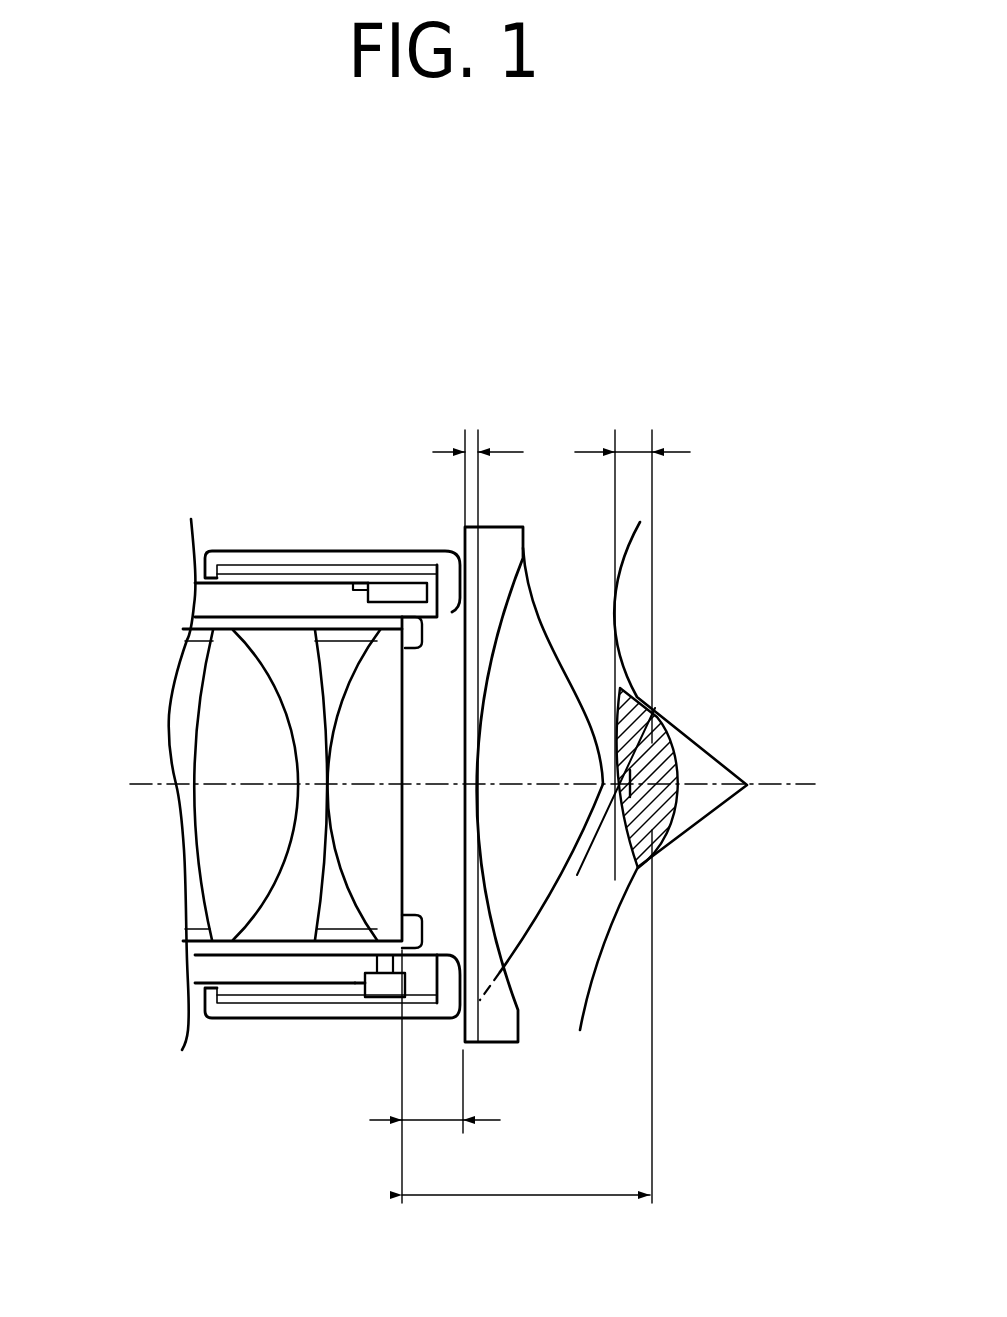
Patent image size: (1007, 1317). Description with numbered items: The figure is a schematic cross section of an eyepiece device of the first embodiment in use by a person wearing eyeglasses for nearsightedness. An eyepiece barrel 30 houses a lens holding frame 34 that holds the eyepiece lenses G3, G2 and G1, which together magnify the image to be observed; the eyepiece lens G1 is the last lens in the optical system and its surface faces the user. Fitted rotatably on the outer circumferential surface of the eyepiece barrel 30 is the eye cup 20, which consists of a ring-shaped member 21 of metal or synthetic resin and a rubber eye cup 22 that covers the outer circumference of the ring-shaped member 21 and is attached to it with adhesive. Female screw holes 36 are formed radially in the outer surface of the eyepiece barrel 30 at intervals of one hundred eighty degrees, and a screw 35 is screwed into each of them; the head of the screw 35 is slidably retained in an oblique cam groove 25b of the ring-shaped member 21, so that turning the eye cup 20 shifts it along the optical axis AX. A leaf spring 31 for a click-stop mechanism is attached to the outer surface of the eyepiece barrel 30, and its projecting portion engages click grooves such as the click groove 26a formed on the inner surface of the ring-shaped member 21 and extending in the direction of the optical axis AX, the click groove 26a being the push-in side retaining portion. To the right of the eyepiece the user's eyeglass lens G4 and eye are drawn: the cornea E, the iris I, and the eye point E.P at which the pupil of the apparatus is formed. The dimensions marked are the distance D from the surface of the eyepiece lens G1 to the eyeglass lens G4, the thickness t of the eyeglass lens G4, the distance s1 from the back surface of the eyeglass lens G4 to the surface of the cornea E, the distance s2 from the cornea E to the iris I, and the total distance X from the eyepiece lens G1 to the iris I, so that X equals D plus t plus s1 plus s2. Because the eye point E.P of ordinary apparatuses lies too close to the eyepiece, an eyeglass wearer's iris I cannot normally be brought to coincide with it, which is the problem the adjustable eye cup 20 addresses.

The eye cup 20 is at (326, 684).
The ring-shaped member 21 is at (247, 565).
The rubber eye cup 22 is at (320, 565).
The click groove 26a is at (372, 583).
The eyepiece barrel 30 is at (213, 602).
The leaf spring 31 is at (397, 583).
The lens holding frame 34 is at (200, 620).
The screw 35 is at (388, 990).
The female screw hole 36 is at (410, 920).
The cam groove 25b is at (383, 998).
The eyepiece lens G1 is at (373, 898).
The eyepiece lens G2 is at (288, 877).
The eyepiece lens G3 is at (217, 815).
The eyeglass lens G4 is at (507, 1040).
The cornea E is at (577, 875).
The eye point E.P is at (633, 790).
The iris I is at (660, 710).
The optical axis AX is at (795, 788).
The thickness of the eyeglass lens t is at (478, 715).
The distance from the eyeglass lens to the cornea s1 is at (571, 655).
The distance from the cornea to the iris s2 is at (652, 796).
The distance from the eyepiece lens to the eyeglass lens D is at (435, 1076).
The distance from the eyepiece lens to the iris X is at (526, 1174).